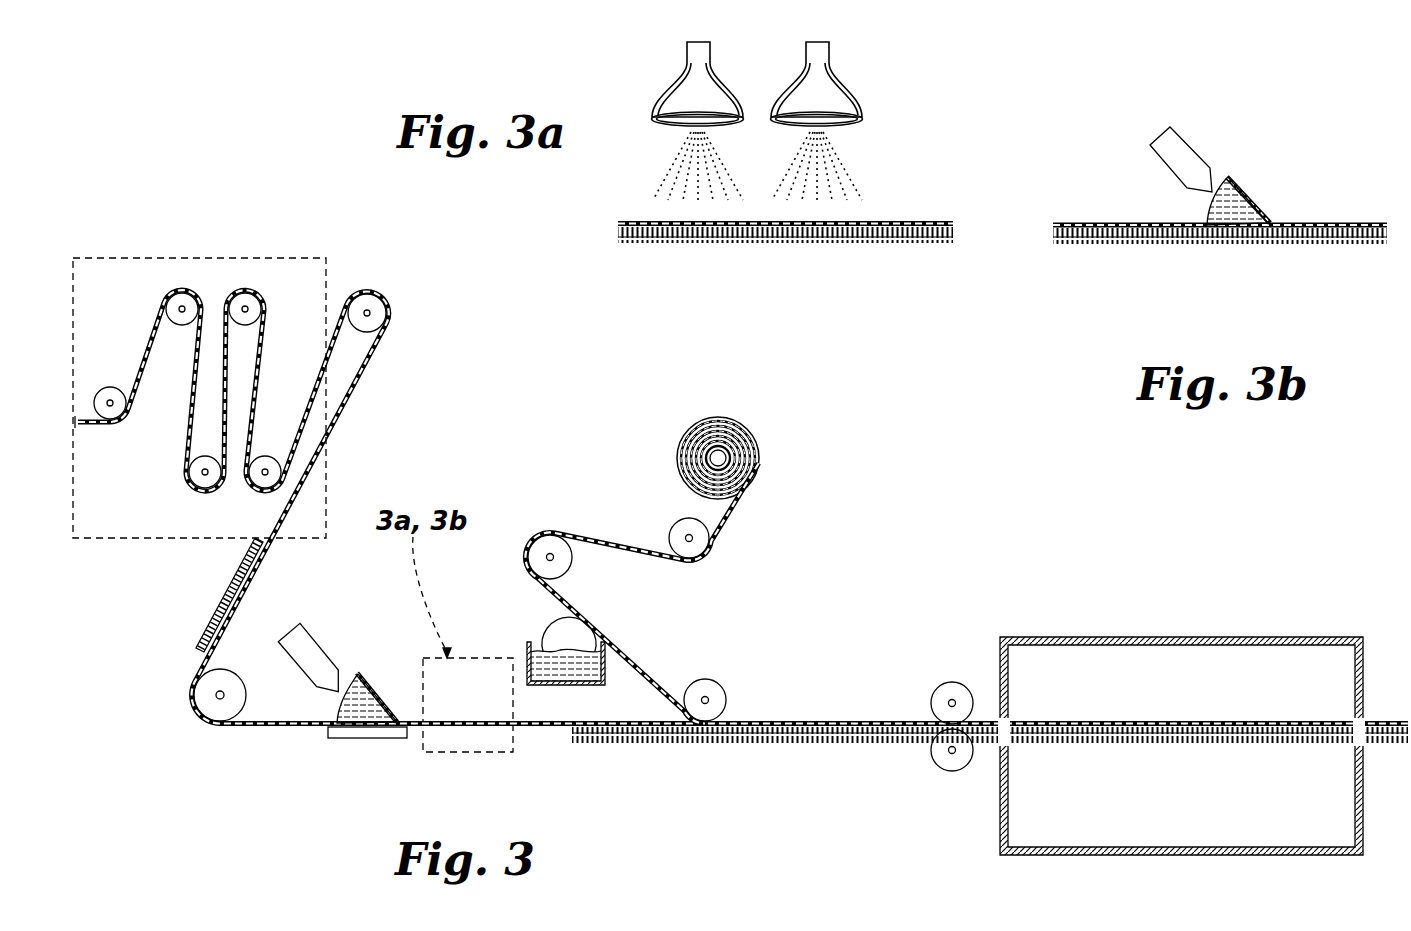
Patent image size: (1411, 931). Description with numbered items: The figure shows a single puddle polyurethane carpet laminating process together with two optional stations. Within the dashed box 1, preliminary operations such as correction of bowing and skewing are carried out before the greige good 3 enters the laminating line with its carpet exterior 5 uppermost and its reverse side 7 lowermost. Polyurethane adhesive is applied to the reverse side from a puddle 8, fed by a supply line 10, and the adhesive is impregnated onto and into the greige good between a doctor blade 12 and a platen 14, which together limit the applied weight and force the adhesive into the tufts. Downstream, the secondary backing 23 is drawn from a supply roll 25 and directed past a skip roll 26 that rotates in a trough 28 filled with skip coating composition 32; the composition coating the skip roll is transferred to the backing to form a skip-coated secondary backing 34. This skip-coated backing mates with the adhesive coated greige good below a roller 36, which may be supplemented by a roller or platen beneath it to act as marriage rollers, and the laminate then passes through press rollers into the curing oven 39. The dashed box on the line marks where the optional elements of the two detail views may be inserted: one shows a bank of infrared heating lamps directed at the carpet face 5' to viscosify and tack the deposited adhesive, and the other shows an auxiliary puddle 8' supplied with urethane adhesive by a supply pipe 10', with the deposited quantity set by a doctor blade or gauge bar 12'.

In FIG. 3, the dashed box 1 is at (127, 552).
In FIG. 3, the greige good 3 is at (195, 636).
In FIG. 3, the carpet exterior 5 is at (200, 595).
In FIG. 3, the reverse side 7 is at (232, 622).
In FIG. 3A, the reverse side 7 is at (892, 223).
In FIG. 3B, the reverse side 7 is at (1298, 227).
In FIG. 3, the puddle 8 is at (337, 743).
In FIG. 3, the supply line 10 is at (308, 625).
In FIG. 3, the doctor blade 12 is at (377, 640).
In FIG. 3, the platen 14 is at (380, 737).
In FIG. 3, the secondary backing 23 is at (722, 525).
In FIG. 3, the supply roll 25 is at (763, 462).
In FIG. 3, the skip roll 26 is at (543, 627).
In FIG. 3, the trough 28 is at (560, 683).
In FIG. 3, the skip coating composition 32 is at (607, 663).
In FIG. 3, the skip-coated secondary backing 34 is at (633, 677).
In FIG. 3, the roller 36 is at (728, 703).
In FIG. 3, the oven 39 is at (1218, 658).
In FIG. 3A, the fiber layer 5' is at (797, 278).
In FIG. 3B, the fiber layer 5' is at (1231, 278).
In FIG. 3B, the supply pipe 10' is at (1203, 138).
In FIG. 3B, the doctor blade or gauge bar 12' is at (1269, 153).
In FIG. 3B, the auxiliary puddle 8' is at (1207, 246).